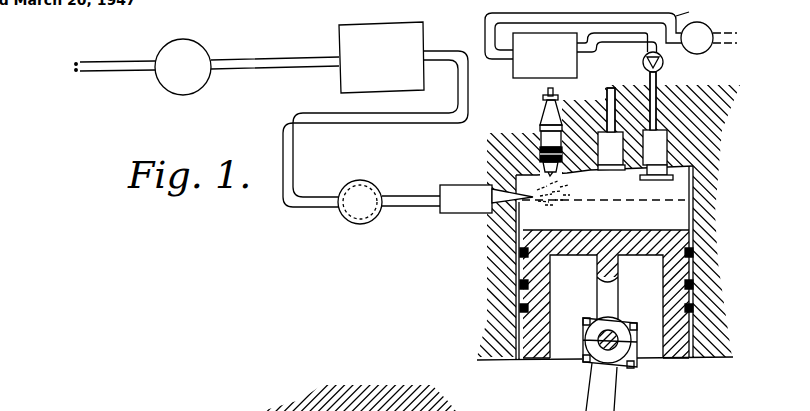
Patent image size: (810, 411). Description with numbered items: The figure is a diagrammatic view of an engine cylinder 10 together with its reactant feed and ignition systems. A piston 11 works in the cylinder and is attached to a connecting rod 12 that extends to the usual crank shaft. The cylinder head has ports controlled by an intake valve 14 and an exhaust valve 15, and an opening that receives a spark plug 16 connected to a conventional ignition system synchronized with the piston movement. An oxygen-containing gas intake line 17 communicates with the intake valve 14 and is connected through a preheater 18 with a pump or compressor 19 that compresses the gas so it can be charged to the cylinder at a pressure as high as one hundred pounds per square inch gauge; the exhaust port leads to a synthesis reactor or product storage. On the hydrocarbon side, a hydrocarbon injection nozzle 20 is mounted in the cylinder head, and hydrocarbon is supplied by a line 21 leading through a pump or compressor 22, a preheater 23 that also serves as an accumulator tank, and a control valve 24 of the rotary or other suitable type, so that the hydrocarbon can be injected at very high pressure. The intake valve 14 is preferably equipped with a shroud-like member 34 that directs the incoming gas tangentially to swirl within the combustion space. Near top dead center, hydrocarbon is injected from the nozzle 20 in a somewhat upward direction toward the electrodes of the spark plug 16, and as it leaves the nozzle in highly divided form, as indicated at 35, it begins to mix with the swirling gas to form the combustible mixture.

The engine cylinder 10 is at (692, 212).
The piston 11 is at (583, 232).
The connecting rod 12 is at (617, 393).
The intake valve 14 is at (645, 185).
The exhaust valve 15 is at (618, 173).
The spark plug 16 is at (571, 172).
The oxygen-containing gas intake line 17 is at (642, 42).
The preheater 18 is at (520, 78).
The pump or compressor 19 is at (708, 48).
The hydrocarbon injection nozzle 20 is at (521, 204).
The line 21 is at (110, 73).
The pump or compressor 22 is at (187, 95).
The preheater 23 is at (339, 75).
The control valve 24 is at (350, 223).
The shroud-like member 34 is at (667, 168).
The region of impregnation 35 is at (535, 172).